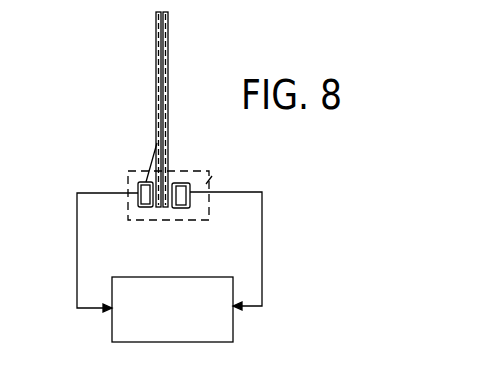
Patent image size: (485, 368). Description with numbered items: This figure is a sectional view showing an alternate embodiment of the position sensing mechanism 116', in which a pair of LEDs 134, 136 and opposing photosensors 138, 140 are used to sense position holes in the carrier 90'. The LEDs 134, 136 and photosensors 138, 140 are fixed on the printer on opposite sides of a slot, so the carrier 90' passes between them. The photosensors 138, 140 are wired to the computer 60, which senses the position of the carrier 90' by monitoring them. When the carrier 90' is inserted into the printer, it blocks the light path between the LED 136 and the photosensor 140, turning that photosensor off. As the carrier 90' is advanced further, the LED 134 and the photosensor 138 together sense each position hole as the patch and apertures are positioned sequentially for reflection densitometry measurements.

The carrier 90' is at (107, 109).
The position sensing mechanism 116' is at (205, 179).
The LED 134 is at (138, 186).
The LED 136 is at (157, 143).
The photosensor 138 is at (186, 182).
The photosensor 140 is at (206, 184).
The computer 60 is at (128, 318).